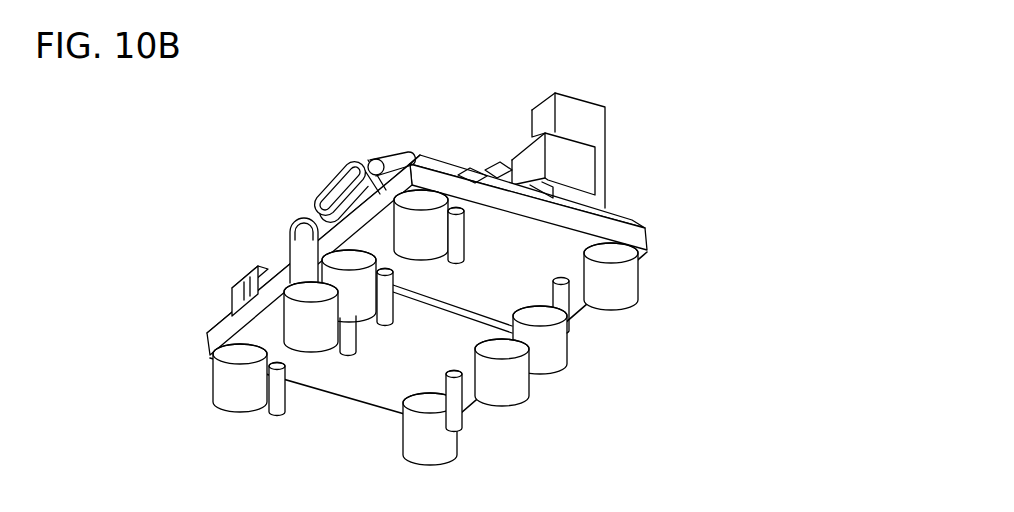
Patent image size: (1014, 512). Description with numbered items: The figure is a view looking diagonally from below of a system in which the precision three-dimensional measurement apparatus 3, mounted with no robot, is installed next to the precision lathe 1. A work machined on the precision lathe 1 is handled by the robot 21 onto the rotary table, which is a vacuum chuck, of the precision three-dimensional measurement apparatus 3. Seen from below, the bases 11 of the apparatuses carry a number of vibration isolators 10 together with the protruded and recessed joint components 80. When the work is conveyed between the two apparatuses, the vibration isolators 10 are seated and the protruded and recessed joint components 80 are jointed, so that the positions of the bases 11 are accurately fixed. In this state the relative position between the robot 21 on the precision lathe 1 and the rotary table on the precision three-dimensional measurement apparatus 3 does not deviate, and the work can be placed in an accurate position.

The precision lathe 1 is at (484, 430).
The precision three-dimensional measurement apparatus 3 is at (585, 327).
The vibration isolator 10 is at (630, 277).
The base 11 is at (632, 230).
The robot 21 is at (340, 172).
The protruded and recessed joint component 80 is at (453, 210).